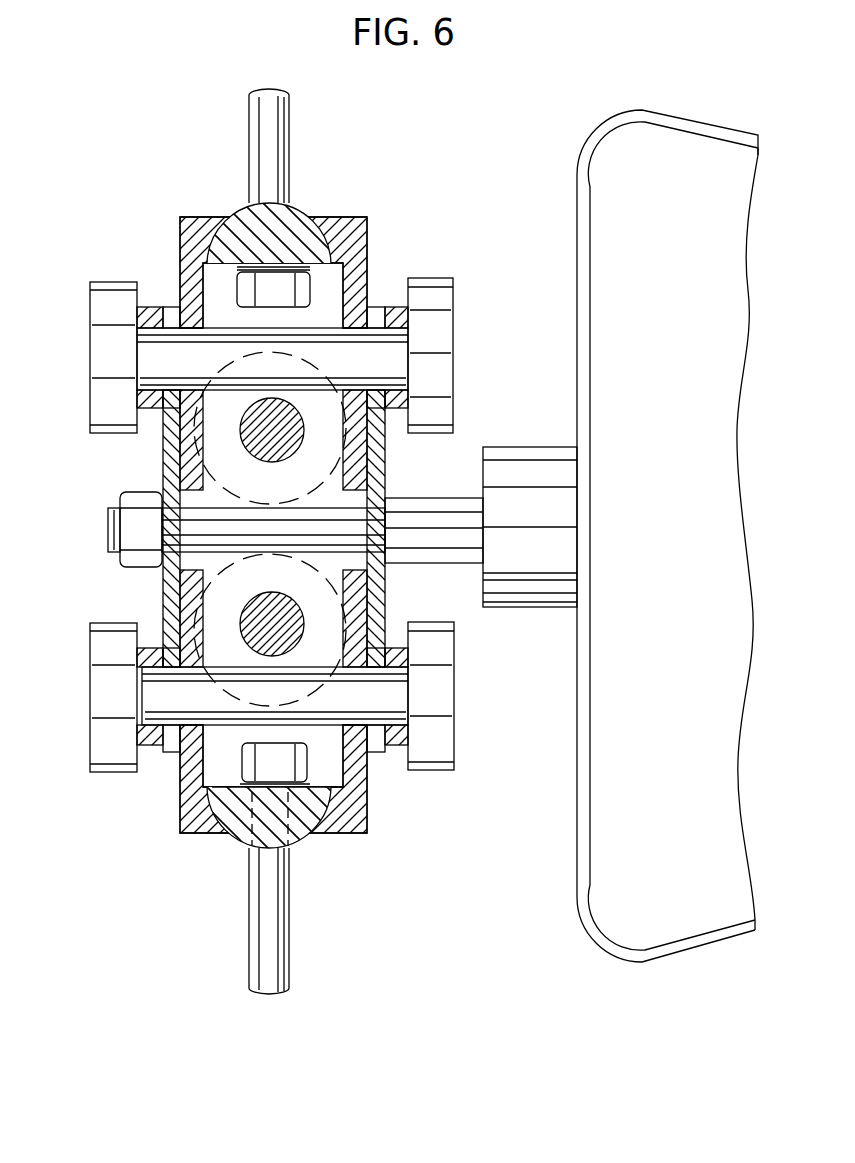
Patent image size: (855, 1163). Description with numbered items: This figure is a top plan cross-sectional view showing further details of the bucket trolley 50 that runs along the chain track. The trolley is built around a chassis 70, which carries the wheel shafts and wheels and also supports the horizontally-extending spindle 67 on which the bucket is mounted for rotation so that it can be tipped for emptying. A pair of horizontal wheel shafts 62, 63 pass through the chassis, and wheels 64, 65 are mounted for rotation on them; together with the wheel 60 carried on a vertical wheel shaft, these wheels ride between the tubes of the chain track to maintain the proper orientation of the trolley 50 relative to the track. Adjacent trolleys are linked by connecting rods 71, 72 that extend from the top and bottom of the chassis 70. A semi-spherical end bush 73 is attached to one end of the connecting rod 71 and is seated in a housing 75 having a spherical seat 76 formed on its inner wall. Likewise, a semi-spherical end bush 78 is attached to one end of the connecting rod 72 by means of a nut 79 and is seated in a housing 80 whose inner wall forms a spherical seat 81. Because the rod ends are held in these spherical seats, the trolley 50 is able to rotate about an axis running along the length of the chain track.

The bucket trolley 50 is at (212, 936).
The wheel 60 is at (215, 462).
The horizontal wheel shaft 62 is at (155, 333).
The horizontal wheel shaft 63 is at (396, 333).
The wheel 64 is at (108, 412).
The wheel 65 is at (445, 325).
The spindle 67 is at (430, 540).
The chassis 70 is at (384, 455).
The connecting rod 71 is at (258, 133).
The connecting rod 72 is at (286, 963).
The semi-spherical end bush 73 is at (301, 214).
The housing 75 is at (181, 230).
The spherical seat 76 is at (313, 245).
The semi-spherical end bush 78 is at (242, 833).
The nut 79 is at (185, 832).
The housing 80 is at (358, 824).
The spherical seat 81 is at (322, 842).